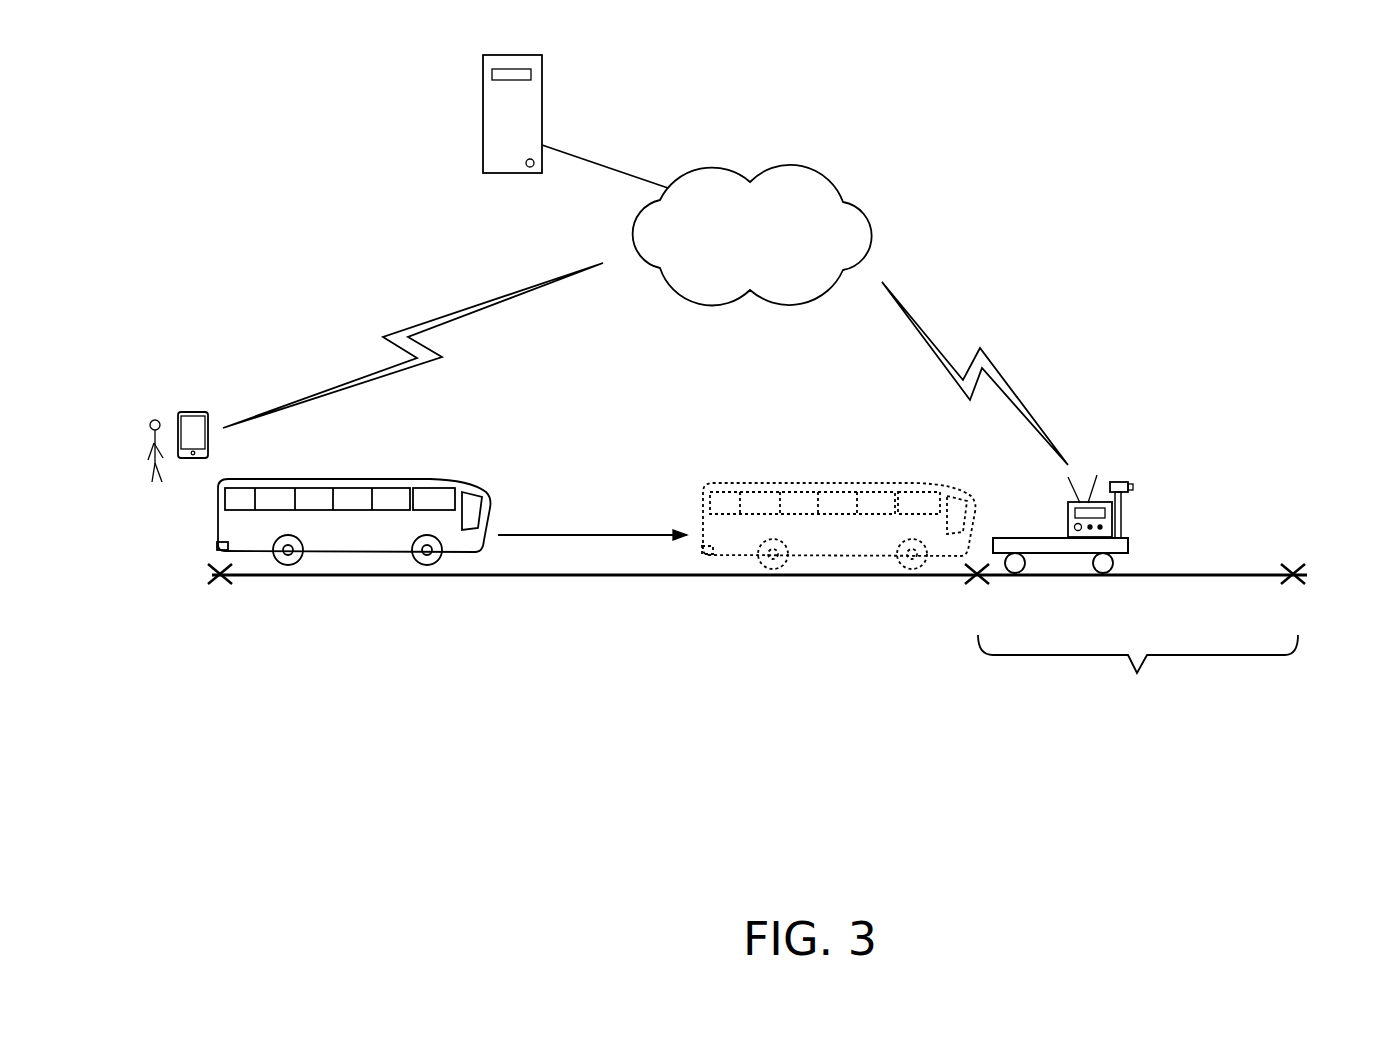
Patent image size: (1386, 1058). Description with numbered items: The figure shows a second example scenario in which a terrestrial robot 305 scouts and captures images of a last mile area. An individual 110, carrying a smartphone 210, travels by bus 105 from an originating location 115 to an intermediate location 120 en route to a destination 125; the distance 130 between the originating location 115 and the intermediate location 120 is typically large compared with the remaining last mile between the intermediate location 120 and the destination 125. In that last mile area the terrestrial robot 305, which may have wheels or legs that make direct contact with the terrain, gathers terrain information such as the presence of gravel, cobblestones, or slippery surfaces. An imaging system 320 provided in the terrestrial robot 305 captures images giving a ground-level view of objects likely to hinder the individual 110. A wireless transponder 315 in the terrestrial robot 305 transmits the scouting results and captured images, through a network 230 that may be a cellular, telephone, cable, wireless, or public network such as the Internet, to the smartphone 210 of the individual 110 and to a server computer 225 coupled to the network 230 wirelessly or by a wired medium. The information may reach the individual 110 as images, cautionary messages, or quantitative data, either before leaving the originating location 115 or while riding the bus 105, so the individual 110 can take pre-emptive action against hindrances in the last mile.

The bus 105 is at (420, 470).
The individual 110 is at (148, 413).
The originating location 115 is at (221, 593).
The intermediate location 120 is at (976, 590).
The destination 125 is at (1294, 592).
The distance 130 is at (1138, 670).
The smartphone 210 is at (197, 407).
The server computer 225 is at (550, 92).
The network 230 is at (827, 213).
The terrestrial robot 305 is at (1101, 478).
The wireless transponder 315 is at (1062, 517).
The imaging system 320 is at (1138, 478).